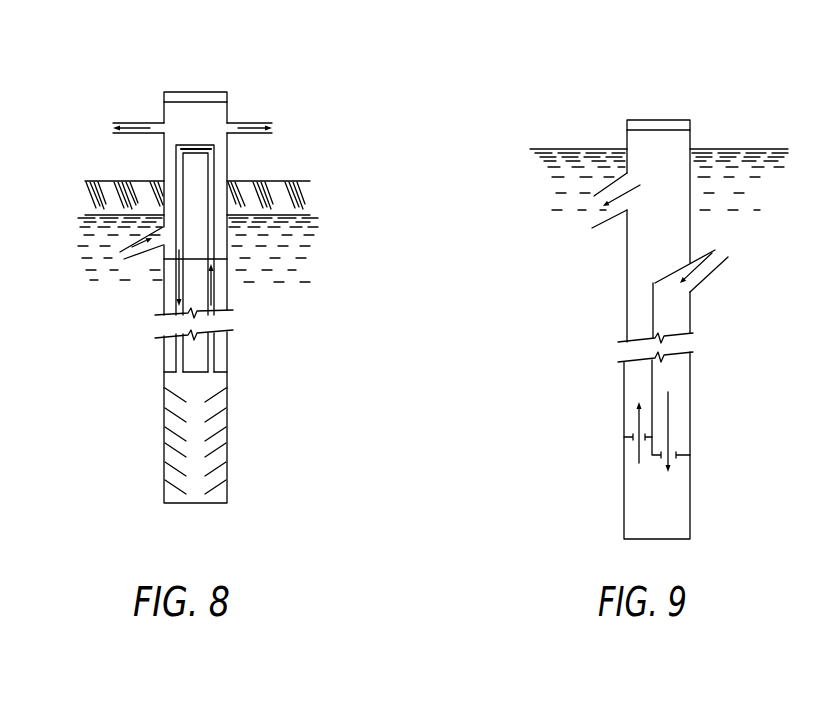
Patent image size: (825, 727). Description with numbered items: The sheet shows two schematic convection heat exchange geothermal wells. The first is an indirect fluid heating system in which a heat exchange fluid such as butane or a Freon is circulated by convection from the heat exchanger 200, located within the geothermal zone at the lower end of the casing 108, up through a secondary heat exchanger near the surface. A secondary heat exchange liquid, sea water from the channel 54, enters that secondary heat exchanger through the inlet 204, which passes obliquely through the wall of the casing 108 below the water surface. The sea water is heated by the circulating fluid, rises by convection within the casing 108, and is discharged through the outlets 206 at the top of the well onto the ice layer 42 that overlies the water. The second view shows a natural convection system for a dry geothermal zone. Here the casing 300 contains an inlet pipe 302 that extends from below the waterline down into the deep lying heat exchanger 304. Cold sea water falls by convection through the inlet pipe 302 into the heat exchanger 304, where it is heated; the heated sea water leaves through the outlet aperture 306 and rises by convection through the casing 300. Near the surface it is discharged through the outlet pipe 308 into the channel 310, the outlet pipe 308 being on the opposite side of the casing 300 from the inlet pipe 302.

In FIG. 8, the ice layer 42 is at (297, 181).
In FIG. 8, the channel 54 is at (329, 277).
In FIG. 8, the casing 108 is at (227, 355).
In FIG. 8, the heat exchanger 200 is at (227, 449).
In FIG. 8, the inlet 204 is at (143, 254).
In FIG. 8, the outlets 206 is at (248, 124).
In FIG. 9, the casing 300 is at (690, 386).
In FIG. 9, the inlet pipe 302 is at (707, 280).
In FIG. 9, the heat exchanger 304 is at (690, 508).
In FIG. 9, the outlet aperture 306 is at (632, 438).
In FIG. 9, the outlet pipe 308 is at (608, 220).
In FIG. 9, the channel 310 is at (788, 210).